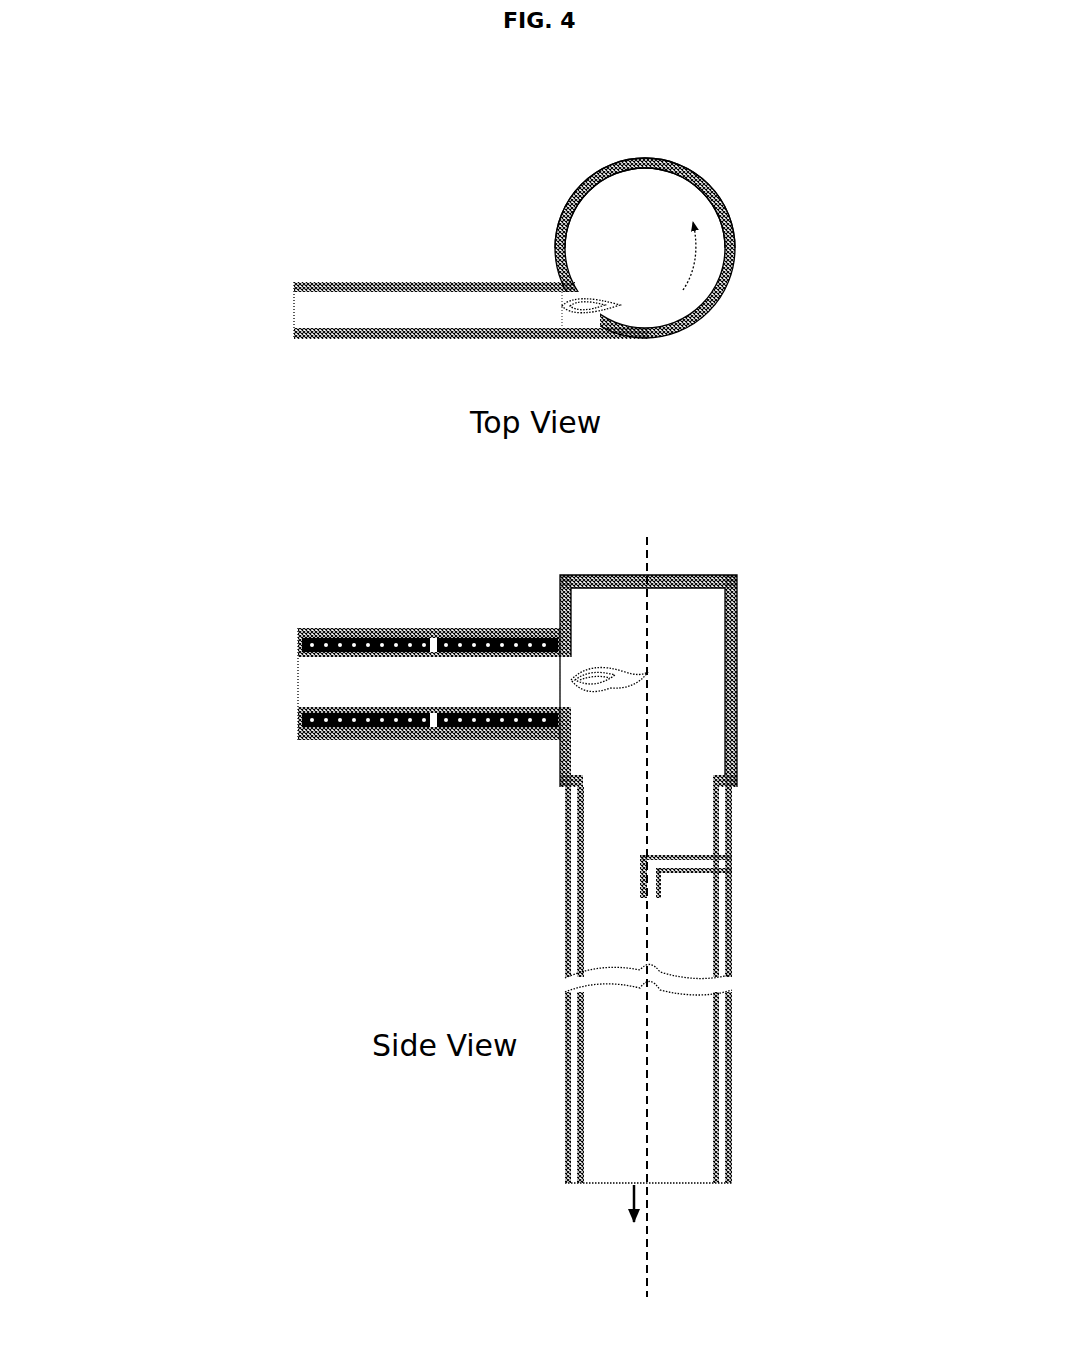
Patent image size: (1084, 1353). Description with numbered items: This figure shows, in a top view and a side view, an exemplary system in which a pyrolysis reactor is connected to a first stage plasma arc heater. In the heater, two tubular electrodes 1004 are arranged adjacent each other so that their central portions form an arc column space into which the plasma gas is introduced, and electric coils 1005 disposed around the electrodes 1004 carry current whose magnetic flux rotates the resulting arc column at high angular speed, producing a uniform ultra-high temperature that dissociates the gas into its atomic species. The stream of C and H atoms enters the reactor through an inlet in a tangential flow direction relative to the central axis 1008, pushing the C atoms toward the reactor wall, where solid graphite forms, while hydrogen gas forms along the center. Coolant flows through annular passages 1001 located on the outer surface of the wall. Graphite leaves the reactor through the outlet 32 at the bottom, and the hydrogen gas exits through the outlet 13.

The outlet 13 is at (742, 858).
The outlet 32 is at (628, 1198).
The passages 1001 is at (565, 923).
The tubular electrodes 1004 is at (487, 703).
The coils 1005 is at (437, 647).
The central axis 1008 is at (650, 1284).